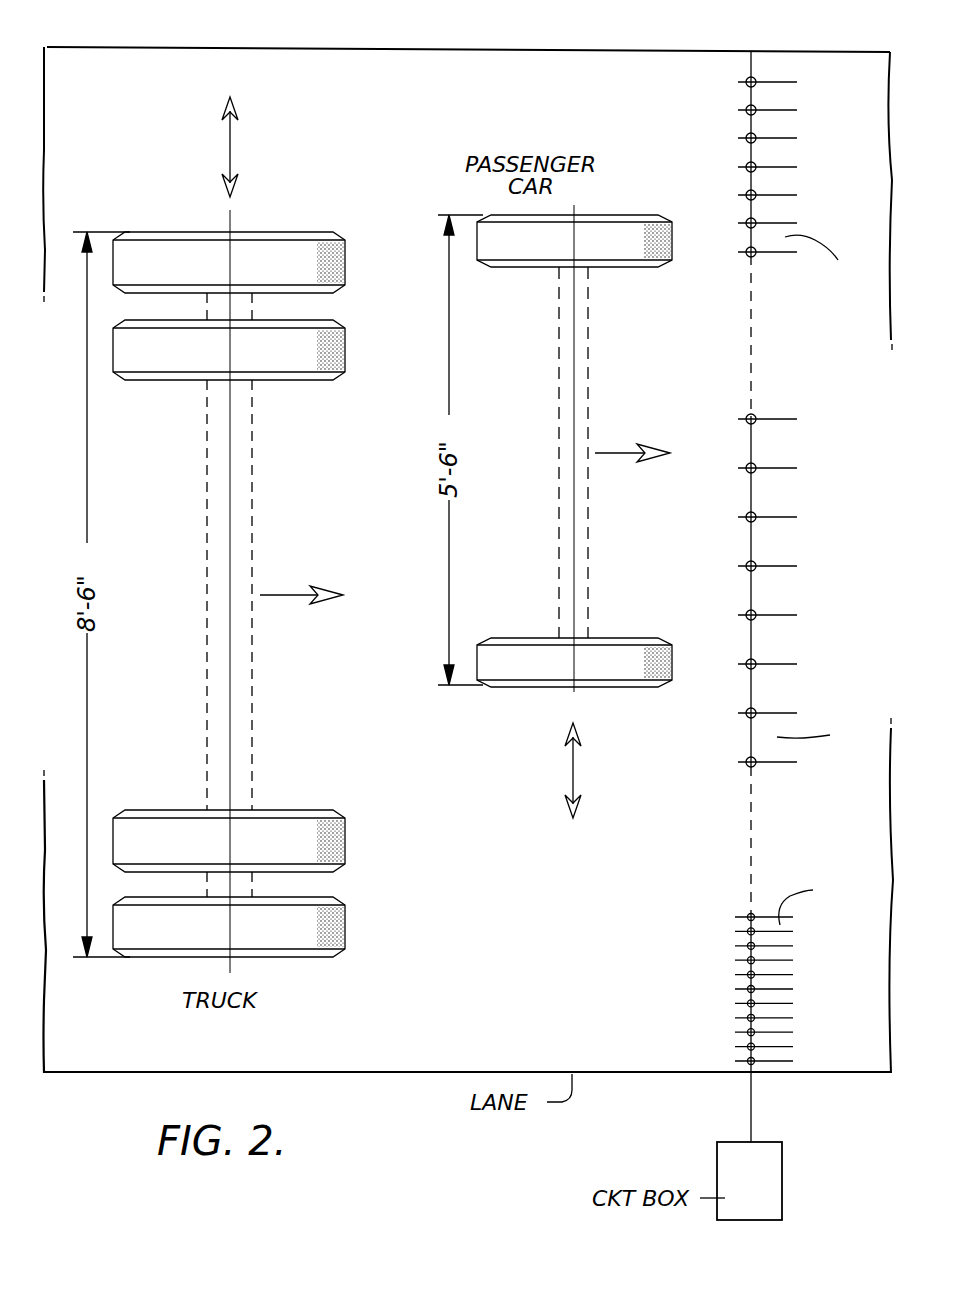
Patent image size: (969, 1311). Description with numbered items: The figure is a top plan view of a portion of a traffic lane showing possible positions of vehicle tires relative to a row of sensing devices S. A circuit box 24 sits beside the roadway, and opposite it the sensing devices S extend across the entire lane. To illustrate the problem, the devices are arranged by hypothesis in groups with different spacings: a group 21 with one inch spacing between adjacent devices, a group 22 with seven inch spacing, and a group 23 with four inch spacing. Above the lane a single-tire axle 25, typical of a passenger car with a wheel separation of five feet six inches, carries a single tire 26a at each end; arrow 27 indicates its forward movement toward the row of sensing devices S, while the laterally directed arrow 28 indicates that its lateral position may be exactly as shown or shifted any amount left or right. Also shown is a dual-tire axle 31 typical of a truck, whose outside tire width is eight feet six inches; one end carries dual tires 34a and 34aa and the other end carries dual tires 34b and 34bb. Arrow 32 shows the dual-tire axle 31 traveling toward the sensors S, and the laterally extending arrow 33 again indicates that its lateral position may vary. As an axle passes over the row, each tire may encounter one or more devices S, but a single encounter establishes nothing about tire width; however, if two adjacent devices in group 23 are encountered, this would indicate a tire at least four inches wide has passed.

The group of sensing devices 21 is at (802, 908).
The group of sensing devices 22 is at (802, 400).
The group of sensing devices 23 is at (802, 73).
The circuit box 24 is at (762, 1221).
The single-tire axle 25 is at (590, 387).
The single tire 26a is at (642, 267).
The arrow 27 is at (628, 455).
The laterally directed arrow 28 is at (572, 770).
The dual-tire axle 31 is at (205, 477).
The arrow 32 is at (287, 594).
The laterally extending arrow 33 is at (228, 140).
The dual tire 34a is at (317, 381).
The dual tire 34aa is at (300, 218).
The dual tire 34b is at (303, 810).
The dual tire 34bb is at (330, 916).
The sensing device S is at (768, 597).